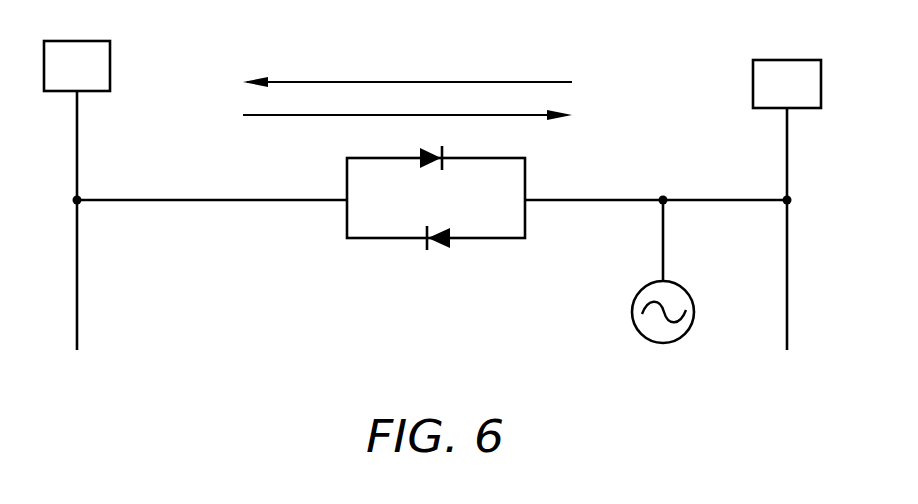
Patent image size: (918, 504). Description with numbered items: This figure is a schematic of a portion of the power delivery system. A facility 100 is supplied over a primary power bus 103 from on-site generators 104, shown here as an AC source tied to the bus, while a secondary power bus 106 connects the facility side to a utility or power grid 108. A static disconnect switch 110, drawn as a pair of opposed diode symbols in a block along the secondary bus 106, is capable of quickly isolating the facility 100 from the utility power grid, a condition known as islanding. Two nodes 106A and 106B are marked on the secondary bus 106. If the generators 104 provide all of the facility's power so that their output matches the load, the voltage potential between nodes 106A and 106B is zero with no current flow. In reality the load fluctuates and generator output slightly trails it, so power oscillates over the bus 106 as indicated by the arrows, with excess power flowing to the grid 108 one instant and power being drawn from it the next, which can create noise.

The facility 100 is at (753, 75).
The primary power bus 103 is at (705, 201).
The on-site generators 104 is at (675, 341).
The secondary power bus 106 is at (243, 202).
The node 106A is at (77, 200).
The node 106B is at (662, 198).
The utility or power grid 108 is at (110, 57).
The static disconnect switch 110 is at (453, 212).